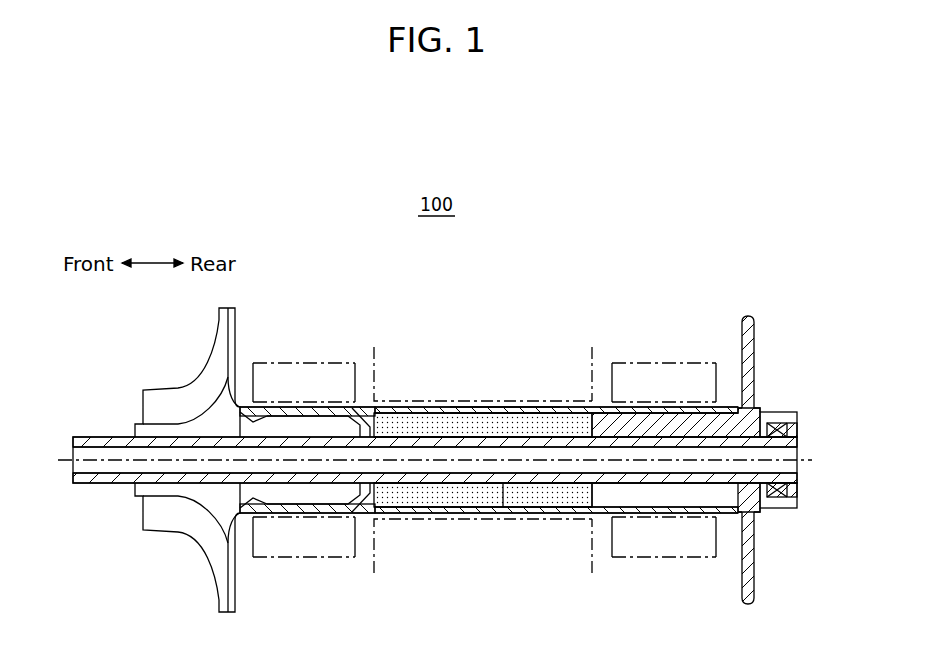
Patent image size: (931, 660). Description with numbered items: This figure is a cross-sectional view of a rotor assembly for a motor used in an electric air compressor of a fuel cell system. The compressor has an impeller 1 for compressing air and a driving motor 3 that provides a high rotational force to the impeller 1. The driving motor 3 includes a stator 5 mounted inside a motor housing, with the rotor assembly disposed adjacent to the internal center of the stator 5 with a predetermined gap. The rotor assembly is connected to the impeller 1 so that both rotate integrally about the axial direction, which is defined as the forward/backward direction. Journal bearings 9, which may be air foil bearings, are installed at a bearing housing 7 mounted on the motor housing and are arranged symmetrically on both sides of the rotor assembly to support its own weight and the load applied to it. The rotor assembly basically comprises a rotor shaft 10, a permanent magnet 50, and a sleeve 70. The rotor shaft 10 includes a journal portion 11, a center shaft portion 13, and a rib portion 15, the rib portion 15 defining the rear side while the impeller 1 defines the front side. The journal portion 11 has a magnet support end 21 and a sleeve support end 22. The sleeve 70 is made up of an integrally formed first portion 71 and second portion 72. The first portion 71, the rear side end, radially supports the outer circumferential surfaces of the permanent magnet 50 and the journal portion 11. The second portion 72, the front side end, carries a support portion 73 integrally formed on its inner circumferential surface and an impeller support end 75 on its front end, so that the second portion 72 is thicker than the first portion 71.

The impeller 1 is at (178, 388).
The driving motor 3 is at (599, 347).
The stator 5 is at (375, 345).
The bearing housing 7 is at (303, 362).
The journal bearing 9 is at (305, 400).
The rotor shaft 10 is at (556, 487).
The journal portion 11 is at (660, 498).
The center shaft portion 13 is at (503, 508).
The rib portion 15 is at (756, 337).
The magnet support end 21 is at (578, 508).
The sleeve support end 22 is at (755, 408).
The permanent magnet 50 is at (467, 511).
The sleeve 70 is at (386, 406).
The first portion 71 is at (497, 406).
The second portion 72 is at (298, 514).
The support portion 73 is at (368, 492).
The impeller support end 75 is at (245, 414).